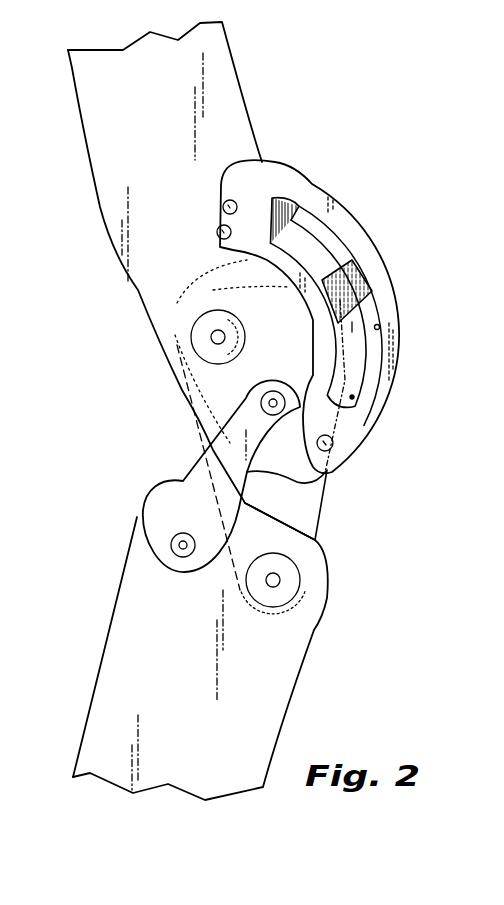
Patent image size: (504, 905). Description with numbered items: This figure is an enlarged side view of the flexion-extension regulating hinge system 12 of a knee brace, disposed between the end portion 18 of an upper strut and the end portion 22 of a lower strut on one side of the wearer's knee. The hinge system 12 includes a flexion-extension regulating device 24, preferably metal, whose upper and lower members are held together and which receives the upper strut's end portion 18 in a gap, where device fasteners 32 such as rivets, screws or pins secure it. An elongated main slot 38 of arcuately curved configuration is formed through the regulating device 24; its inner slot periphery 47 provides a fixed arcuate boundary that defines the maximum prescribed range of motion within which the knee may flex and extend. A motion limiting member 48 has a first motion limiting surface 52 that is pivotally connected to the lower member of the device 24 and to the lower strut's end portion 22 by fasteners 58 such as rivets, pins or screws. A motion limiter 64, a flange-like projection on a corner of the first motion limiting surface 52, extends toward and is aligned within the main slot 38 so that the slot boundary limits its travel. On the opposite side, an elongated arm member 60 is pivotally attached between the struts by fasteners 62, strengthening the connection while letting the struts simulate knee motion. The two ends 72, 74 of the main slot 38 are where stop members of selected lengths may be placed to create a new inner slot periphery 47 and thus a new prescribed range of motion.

The hinge system 12 is at (259, 359).
The end portion of upper strut 18 is at (139, 290).
The end portion of lower strut 22 is at (297, 643).
The flexion-extension regulating device 24 is at (388, 275).
The device fasteners 32 is at (217, 232).
The elongated main slot 38 is at (356, 353).
The inner slot periphery 47 is at (378, 327).
The motion limiting member 48 is at (281, 511).
The first motion limiting surface 52 is at (307, 493).
The fasteners 58 is at (211, 337).
The elongated arm member 60 is at (233, 480).
The fasteners 62 is at (269, 403).
The motion limiter 64 is at (347, 282).
The end of main slot 72 is at (288, 217).
The end of main slot 74 is at (353, 397).